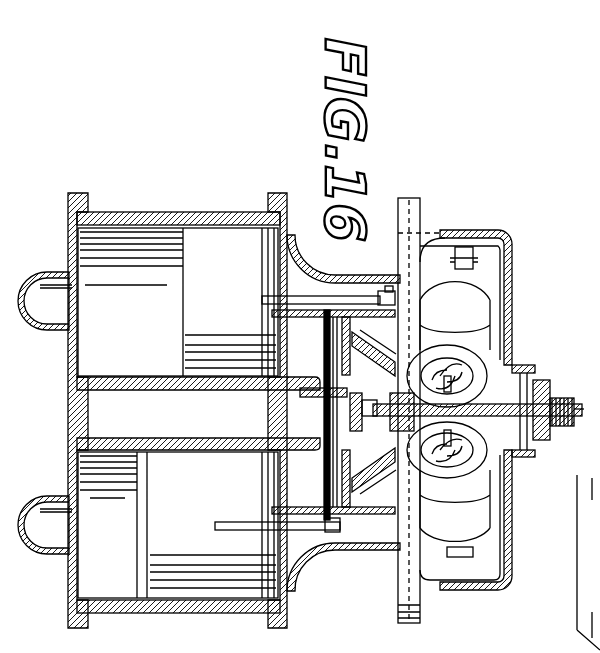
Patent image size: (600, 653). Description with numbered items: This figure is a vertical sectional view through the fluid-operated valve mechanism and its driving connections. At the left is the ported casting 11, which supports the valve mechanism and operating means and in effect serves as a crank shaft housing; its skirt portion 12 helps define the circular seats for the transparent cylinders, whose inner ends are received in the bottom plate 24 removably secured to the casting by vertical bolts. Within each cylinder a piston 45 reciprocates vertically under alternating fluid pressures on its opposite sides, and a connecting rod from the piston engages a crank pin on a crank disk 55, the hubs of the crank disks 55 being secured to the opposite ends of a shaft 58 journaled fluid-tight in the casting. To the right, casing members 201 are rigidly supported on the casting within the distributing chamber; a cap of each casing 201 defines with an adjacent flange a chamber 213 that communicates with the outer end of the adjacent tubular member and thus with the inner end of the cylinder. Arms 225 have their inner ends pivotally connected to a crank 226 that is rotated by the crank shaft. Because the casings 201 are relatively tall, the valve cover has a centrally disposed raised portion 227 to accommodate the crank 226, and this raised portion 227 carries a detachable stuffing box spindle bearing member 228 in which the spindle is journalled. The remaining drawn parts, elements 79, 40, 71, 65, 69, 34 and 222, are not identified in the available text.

The bottom plate 24 is at (70, 400).
The intermediate wall 79 is at (140, 391).
The cylinder head ring 40 is at (45, 413).
The piston 45 is at (196, 312).
The ported casting 11 is at (308, 265).
The skirt portion 12 is at (330, 550).
The crank disk 55 is at (312, 298).
The guide 71 is at (322, 395).
The shaft 58 is at (323, 425).
The strut 65 is at (388, 372).
The bearing bracket 69 is at (360, 418).
The crank 226 is at (540, 445).
The stuffing box spindle bearing member 228 is at (570, 408).
The raised portion 227 is at (532, 366).
The mounting plate 34 is at (478, 236).
The casing member 201 is at (514, 292).
The arm 225 is at (500, 310).
The chamber 213 is at (470, 402).
The hub 222 is at (463, 247).